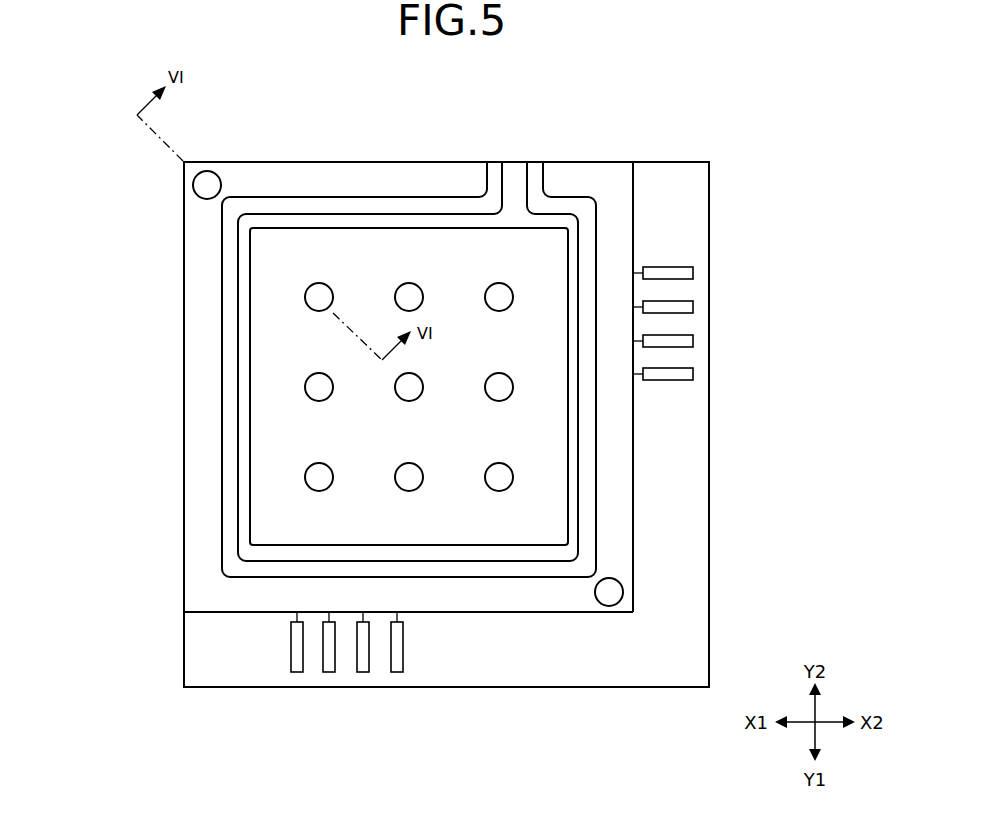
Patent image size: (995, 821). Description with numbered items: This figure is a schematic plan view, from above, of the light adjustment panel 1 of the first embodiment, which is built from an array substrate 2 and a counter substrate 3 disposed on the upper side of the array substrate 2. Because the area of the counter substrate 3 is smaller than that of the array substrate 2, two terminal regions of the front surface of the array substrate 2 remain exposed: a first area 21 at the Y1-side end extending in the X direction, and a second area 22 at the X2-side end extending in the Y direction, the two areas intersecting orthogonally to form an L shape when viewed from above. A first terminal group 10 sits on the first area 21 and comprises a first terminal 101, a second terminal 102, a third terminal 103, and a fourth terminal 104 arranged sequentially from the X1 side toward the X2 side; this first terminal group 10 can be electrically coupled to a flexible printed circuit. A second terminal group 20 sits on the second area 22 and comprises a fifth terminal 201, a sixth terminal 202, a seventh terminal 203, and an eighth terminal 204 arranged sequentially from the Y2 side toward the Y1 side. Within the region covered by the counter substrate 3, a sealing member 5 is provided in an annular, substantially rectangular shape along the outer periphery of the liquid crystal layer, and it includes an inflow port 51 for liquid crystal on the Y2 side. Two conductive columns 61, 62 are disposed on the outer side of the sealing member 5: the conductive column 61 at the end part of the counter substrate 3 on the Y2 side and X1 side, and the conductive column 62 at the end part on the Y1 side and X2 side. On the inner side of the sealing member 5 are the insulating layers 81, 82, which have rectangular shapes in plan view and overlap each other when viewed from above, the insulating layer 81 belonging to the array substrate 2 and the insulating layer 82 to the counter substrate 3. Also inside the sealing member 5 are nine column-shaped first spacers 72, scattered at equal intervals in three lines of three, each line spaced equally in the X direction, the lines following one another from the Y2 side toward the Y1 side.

The light adjustment panel 1 is at (708, 64).
The array substrate 2 is at (531, 672).
The counter substrate 3 is at (455, 613).
The sealing member 5 is at (320, 200).
The first terminal group 10 is at (405, 754).
The second terminal group 20 is at (787, 220).
The first area 21 is at (198, 650).
The second area 22 is at (677, 175).
The inflow port 51 is at (518, 178).
The conductive column 61 is at (207, 172).
The conductive column 62 is at (609, 606).
The first spacers 72 is at (499, 477).
The insulating layer 81 is at (253, 515).
The insulating layer 82 is at (409, 386).
The first terminal 101 is at (290, 666).
The second terminal 102 is at (323, 666).
The third terminal 103 is at (358, 666).
The fourth terminal 104 is at (393, 666).
The fifth terminal 201 is at (693, 273).
The sixth terminal 202 is at (693, 307).
The seventh terminal 203 is at (693, 341).
The eighth terminal 204 is at (693, 374).